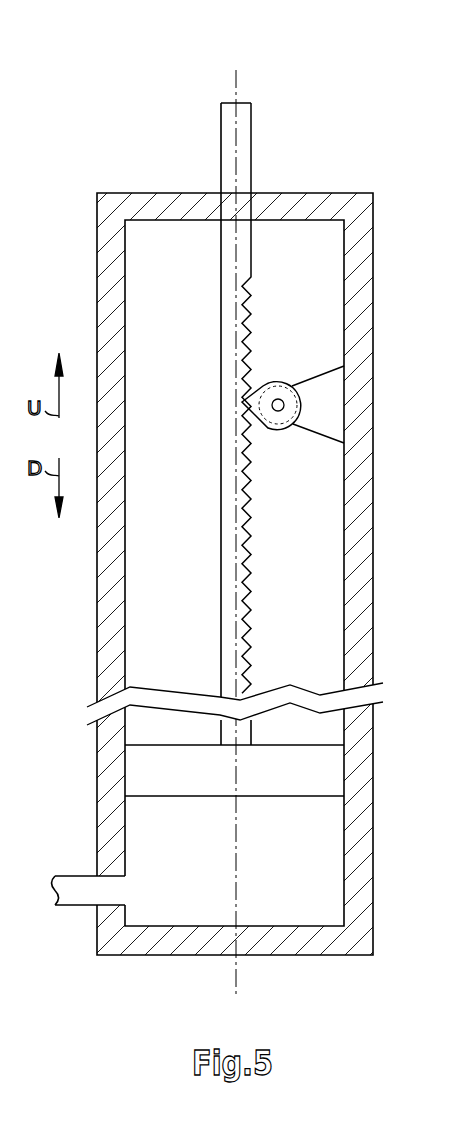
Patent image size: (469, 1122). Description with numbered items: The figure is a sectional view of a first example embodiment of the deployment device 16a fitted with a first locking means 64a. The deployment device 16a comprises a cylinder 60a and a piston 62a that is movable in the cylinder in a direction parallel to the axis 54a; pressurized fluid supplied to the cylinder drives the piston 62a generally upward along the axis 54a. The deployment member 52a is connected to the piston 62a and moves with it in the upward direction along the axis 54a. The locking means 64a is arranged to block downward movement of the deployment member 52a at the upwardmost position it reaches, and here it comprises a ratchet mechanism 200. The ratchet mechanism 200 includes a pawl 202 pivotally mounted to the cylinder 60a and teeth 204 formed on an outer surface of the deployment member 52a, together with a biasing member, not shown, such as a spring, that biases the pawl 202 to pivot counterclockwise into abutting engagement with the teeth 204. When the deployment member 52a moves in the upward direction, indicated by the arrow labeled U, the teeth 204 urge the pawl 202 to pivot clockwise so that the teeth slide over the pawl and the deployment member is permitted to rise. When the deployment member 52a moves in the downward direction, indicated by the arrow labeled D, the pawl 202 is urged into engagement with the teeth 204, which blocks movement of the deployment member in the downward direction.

The deployment device 16a is at (253, 529).
The deployment member 52a is at (199, 424).
The axis 54a is at (236, 990).
The cylinder 60a is at (353, 553).
The piston 62a is at (293, 775).
The locking means 64a is at (306, 318).
The ratchet mechanism 200 is at (288, 440).
The pawl 202 is at (262, 396).
The teeth 204 is at (242, 400).